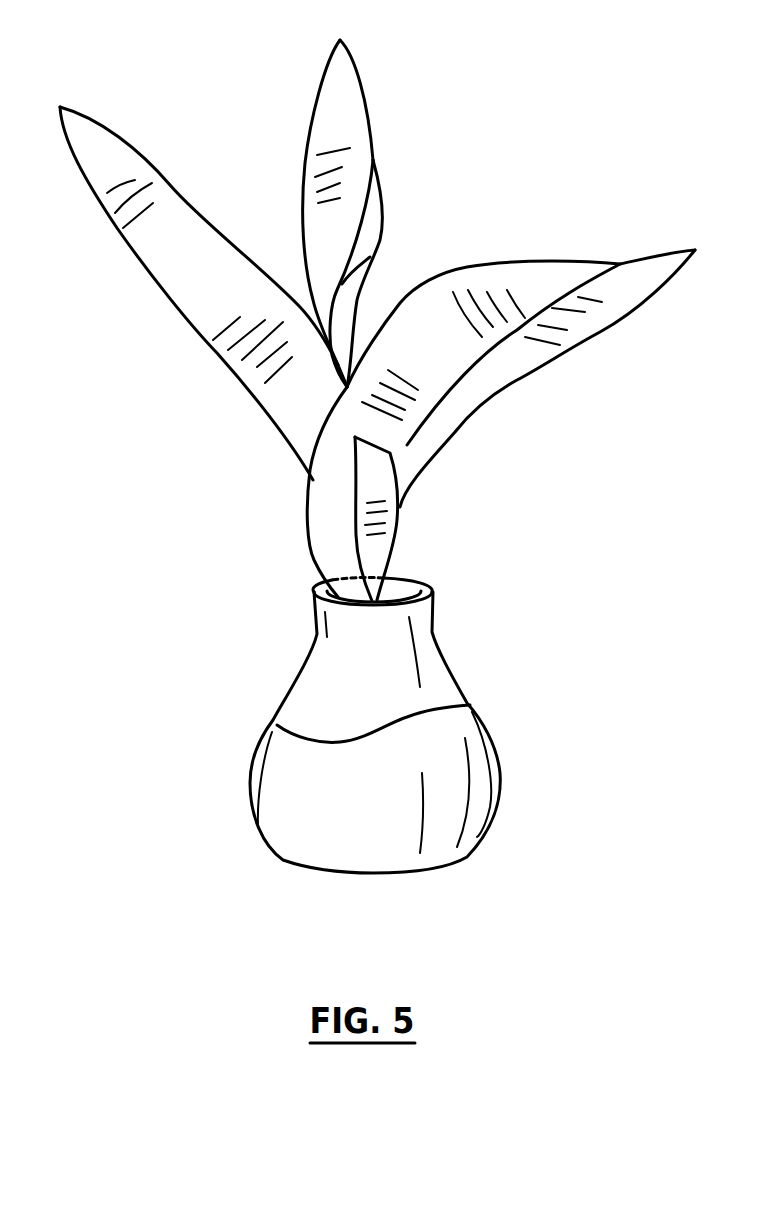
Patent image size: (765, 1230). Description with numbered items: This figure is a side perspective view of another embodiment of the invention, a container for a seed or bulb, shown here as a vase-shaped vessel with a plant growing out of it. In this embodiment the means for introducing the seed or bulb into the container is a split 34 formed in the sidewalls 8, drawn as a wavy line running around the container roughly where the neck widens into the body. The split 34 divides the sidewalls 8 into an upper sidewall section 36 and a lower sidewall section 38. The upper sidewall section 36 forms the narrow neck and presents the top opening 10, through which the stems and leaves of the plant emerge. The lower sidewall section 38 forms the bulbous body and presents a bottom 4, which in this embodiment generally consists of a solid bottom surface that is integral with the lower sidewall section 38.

The bottom 4 is at (418, 884).
The sidewalls 8 is at (481, 712).
The top opening 10 is at (397, 580).
The split 34 is at (300, 735).
The upper sidewall section 36 is at (323, 640).
The lower sidewall section 38 is at (280, 818).